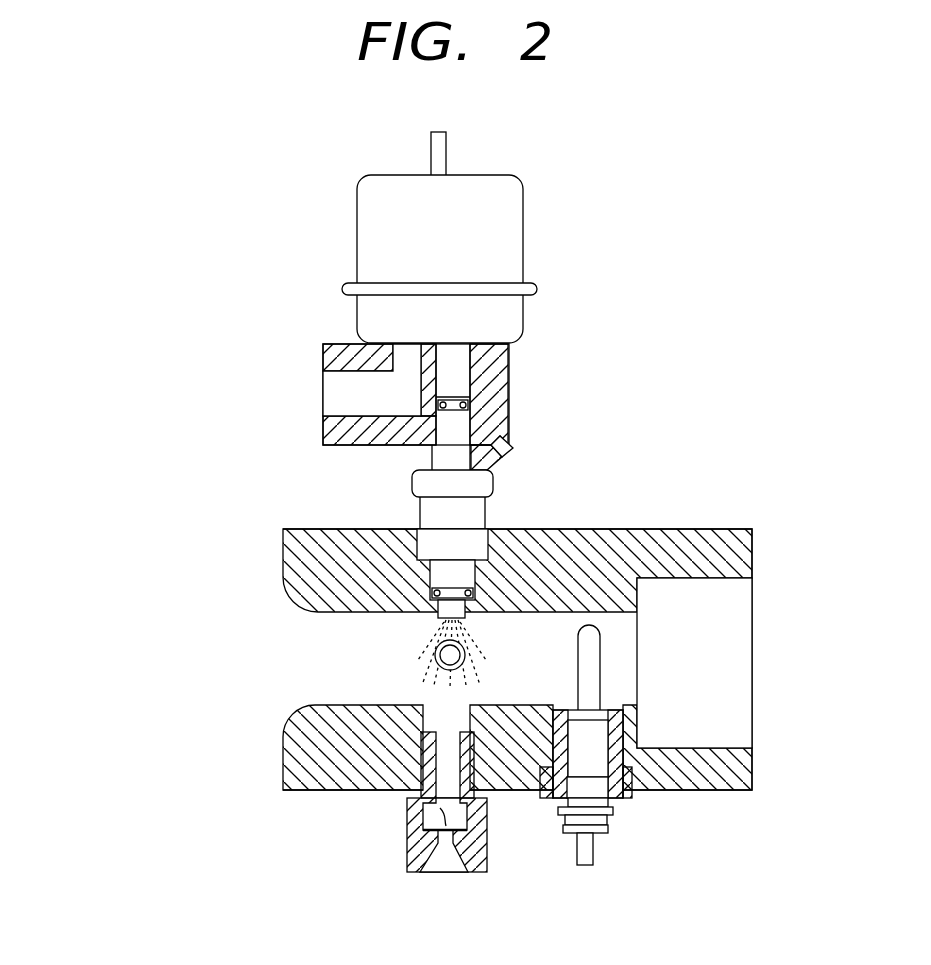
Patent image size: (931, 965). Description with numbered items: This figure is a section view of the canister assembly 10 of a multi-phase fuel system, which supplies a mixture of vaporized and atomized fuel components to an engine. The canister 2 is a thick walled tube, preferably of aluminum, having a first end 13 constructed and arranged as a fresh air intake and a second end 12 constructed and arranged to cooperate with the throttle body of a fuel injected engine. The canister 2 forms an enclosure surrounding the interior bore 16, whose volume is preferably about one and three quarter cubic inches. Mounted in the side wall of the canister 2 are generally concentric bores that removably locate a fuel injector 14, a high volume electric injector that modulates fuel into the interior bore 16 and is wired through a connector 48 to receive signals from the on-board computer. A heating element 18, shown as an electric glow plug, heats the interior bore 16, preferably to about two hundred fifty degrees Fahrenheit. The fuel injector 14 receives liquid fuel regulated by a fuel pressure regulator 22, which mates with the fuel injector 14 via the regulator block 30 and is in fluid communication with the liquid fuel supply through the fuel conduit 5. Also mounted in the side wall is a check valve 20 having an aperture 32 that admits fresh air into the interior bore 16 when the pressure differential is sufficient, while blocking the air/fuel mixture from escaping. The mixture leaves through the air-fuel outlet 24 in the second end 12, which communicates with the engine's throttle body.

The canister assembly 10 is at (163, 390).
The canister 2 is at (348, 790).
The fuel conduit 5 is at (322, 372).
The second end 12 is at (752, 752).
The first end 13 is at (283, 573).
The fuel injector 14 is at (493, 484).
The interior bore 16 is at (373, 630).
The heating element 18 is at (467, 649).
The check valve 20 is at (487, 866).
The fuel pressure regulator 22 is at (523, 208).
The air-fuel outlet 24 is at (730, 636).
The regulator block 30 is at (509, 380).
The aperture 32 is at (437, 842).
The connector 48 is at (507, 440).